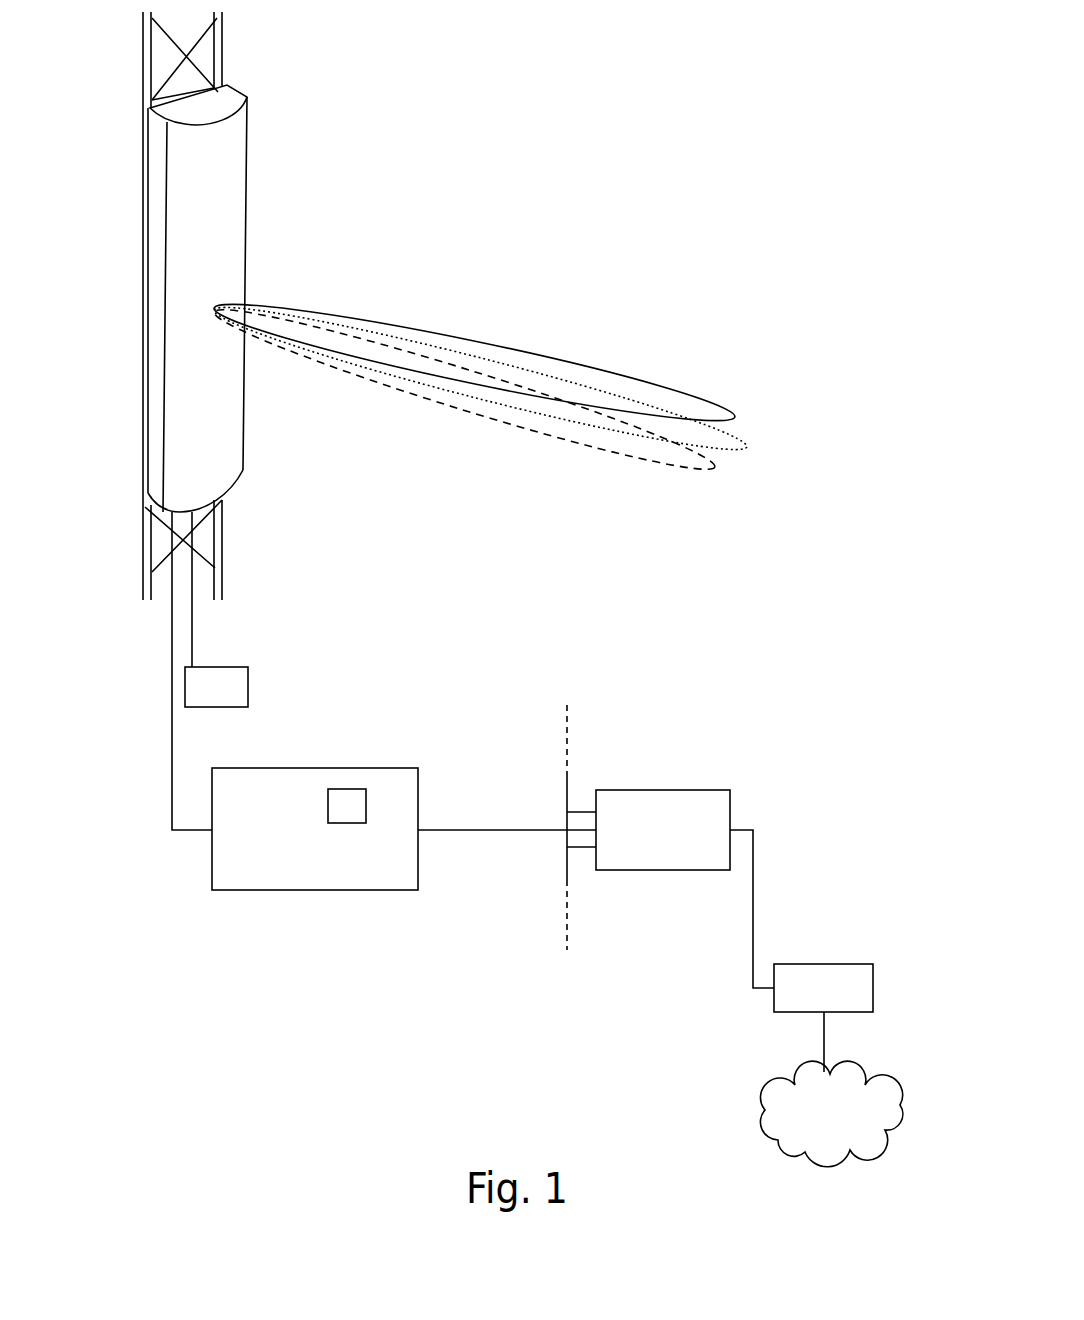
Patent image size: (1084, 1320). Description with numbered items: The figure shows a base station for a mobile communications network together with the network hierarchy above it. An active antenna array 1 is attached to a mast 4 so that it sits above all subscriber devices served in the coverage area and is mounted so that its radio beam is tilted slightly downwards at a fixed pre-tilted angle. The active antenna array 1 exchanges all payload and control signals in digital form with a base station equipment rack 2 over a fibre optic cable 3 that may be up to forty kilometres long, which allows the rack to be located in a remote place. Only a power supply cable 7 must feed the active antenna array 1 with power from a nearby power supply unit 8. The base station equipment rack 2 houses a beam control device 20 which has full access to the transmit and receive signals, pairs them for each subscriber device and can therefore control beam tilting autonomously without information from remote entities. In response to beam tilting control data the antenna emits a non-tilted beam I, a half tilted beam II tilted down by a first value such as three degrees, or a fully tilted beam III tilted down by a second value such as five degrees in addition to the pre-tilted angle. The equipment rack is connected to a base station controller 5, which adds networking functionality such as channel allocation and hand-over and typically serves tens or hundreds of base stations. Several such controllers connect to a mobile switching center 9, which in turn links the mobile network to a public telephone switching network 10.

The active antenna array 1 is at (233, 150).
The base station equipment rack 2 is at (292, 790).
The fibre optic cable 3 is at (170, 748).
The mast 4 is at (148, 62).
The base station controller 5 is at (663, 803).
The power supply cable 7 is at (196, 607).
The power supply unit 8 is at (237, 676).
The mobile switching center 9 is at (824, 968).
The public telephone switching network 10 is at (773, 1125).
The beam control device 20 is at (345, 797).
The non-tilted beam I is at (653, 385).
The half tilted beam II is at (742, 446).
The fully tilted beam III is at (660, 463).